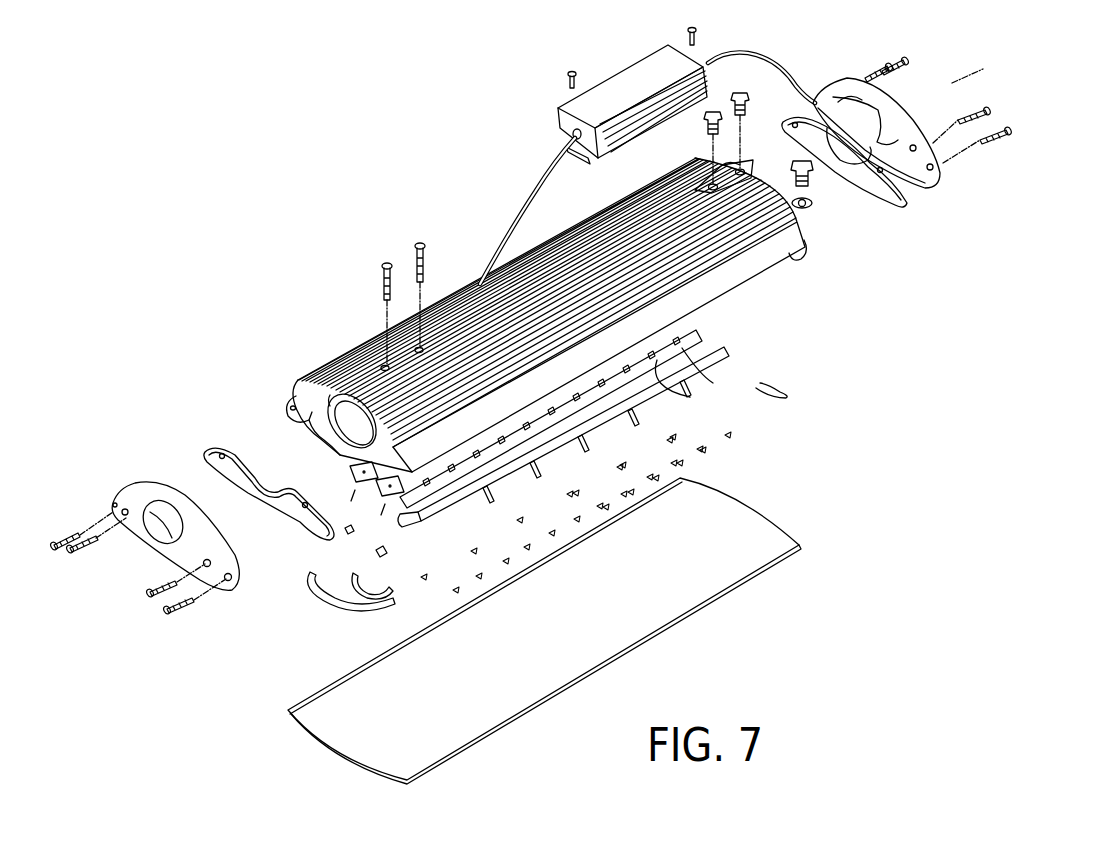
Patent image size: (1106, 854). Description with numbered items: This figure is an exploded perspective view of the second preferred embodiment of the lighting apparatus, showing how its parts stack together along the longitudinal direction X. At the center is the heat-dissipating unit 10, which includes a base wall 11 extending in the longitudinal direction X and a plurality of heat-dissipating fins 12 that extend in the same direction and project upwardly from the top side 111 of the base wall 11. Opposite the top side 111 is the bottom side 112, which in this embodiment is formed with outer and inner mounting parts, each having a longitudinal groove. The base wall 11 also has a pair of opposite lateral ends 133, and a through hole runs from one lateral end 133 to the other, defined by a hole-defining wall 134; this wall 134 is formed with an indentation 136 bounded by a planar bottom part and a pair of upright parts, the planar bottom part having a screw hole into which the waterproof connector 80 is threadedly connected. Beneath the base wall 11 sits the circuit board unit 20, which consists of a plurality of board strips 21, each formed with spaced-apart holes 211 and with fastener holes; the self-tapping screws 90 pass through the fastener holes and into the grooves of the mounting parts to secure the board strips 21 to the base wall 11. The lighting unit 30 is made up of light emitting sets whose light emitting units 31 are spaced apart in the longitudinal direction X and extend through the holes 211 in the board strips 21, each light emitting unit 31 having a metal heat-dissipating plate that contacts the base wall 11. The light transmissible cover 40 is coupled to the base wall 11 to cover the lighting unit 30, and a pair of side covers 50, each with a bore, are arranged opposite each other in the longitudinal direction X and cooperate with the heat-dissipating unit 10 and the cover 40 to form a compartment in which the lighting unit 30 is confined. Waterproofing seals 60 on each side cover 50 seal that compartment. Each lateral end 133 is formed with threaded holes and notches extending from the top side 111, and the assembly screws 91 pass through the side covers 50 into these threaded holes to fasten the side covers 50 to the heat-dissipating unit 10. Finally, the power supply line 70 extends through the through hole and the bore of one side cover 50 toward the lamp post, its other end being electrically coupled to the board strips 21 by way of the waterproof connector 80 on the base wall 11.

The heat-dissipating unit 10 is at (297, 378).
The base wall 11 is at (288, 408).
The heat-dissipating fins 12 is at (798, 257).
The circuit board unit 20 is at (587, 454).
The board strips 21 is at (710, 340).
The spaced-apart holes 211 is at (713, 384).
The lighting unit 30 is at (715, 468).
The light emitting units 31 is at (378, 553).
The light transmissible cover 40 is at (332, 738).
The side covers 50 is at (916, 93).
The waterproofing seals 60 is at (915, 198).
The power supply line 70 is at (752, 54).
The waterproof connector 80 is at (736, 92).
The self-tapping screws 90 is at (788, 398).
The assembly screws 91 is at (882, 64).
The top side 111 is at (330, 390).
The bottom side 112 is at (306, 427).
The lateral ends 133 is at (291, 400).
The hole-defining wall 134 is at (345, 408).
The indentation 136 is at (348, 444).
The longitudinal direction X is at (977, 68).